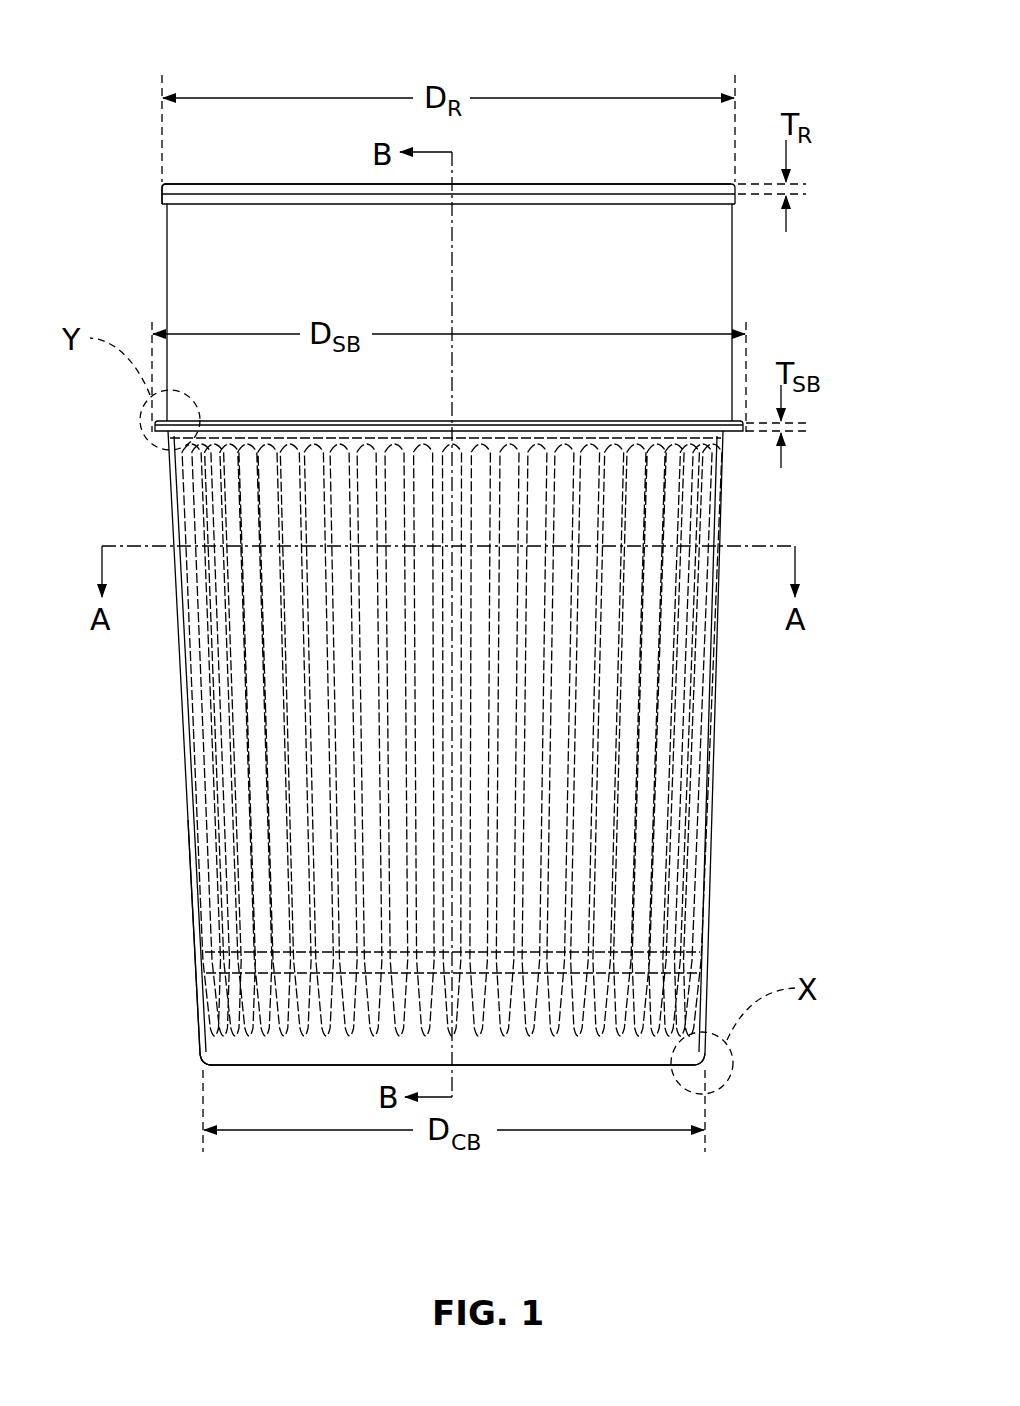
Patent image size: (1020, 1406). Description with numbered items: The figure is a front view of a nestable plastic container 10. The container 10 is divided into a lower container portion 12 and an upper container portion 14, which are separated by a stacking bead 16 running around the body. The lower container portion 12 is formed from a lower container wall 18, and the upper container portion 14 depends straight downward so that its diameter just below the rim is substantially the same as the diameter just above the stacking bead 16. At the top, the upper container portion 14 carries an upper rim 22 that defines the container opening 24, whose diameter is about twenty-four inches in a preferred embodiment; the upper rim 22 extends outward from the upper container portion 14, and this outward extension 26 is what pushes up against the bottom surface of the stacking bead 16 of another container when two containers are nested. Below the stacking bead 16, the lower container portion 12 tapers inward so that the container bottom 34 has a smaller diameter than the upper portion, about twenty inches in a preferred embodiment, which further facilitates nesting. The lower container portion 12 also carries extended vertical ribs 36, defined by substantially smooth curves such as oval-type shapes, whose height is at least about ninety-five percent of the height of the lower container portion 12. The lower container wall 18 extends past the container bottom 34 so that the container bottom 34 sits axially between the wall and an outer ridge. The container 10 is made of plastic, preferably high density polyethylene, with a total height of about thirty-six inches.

The container 10 is at (823, 68).
The lower container portion 12 is at (465, 789).
The upper container portion 14 is at (748, 247).
The stacking bead 16 is at (158, 432).
The lower container wall 18 is at (200, 1027).
The upper rim 22 is at (505, 183).
The container opening 24 is at (235, 162).
The outward extension 26 is at (162, 188).
The container bottom 34 is at (228, 1065).
The extended vertical ribs 36 is at (233, 695).